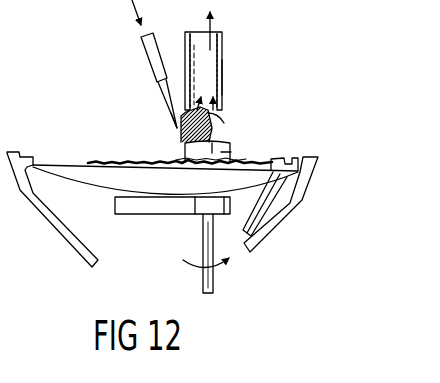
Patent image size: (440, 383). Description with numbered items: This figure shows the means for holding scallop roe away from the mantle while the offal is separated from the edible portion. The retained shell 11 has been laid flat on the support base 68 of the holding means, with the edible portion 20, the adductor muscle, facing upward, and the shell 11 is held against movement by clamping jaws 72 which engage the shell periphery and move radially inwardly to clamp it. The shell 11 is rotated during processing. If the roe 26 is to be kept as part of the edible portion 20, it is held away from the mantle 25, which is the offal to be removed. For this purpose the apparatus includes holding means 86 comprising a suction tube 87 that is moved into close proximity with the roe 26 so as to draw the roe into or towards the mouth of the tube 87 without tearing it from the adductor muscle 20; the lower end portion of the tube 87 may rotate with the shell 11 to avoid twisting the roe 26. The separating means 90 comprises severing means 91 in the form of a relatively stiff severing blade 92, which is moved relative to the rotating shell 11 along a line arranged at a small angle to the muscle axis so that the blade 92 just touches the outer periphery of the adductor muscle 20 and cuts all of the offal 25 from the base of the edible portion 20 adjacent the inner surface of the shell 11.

The retained shell 11 is at (97, 175).
The edible portion 20 is at (230, 148).
The mantle 25 is at (235, 163).
The roe 26 is at (178, 136).
The support base 68 is at (147, 213).
The clamping jaws 72 is at (10, 150).
The holding means 86 is at (232, 42).
The suction tube 87 is at (223, 78).
The separating means 90 is at (133, 52).
The severing means 91 is at (148, 89).
The severing blade 92 is at (163, 106).